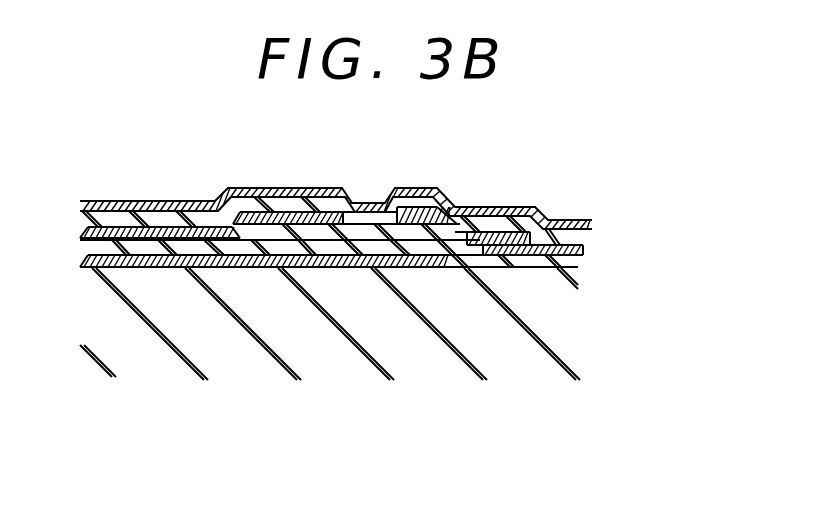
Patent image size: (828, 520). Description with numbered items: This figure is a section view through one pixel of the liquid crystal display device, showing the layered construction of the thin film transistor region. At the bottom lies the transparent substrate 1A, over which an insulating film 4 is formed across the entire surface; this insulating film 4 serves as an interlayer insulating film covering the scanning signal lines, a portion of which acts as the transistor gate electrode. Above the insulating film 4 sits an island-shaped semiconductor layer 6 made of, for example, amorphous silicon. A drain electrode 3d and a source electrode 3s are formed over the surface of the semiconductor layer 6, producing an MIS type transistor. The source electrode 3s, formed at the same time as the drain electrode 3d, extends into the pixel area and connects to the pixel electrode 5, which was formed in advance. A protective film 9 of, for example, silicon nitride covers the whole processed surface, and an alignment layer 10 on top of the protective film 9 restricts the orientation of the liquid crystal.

The transparent substrate 1A is at (567, 310).
The insulating film 4 is at (575, 263).
The pixel electrode 5 is at (578, 248).
The semiconductor layer 6 is at (380, 223).
The source electrode 3s is at (276, 211).
The drain electrode 3d is at (455, 206).
The protective film 9 is at (488, 220).
The alignment layer 10 is at (146, 201).